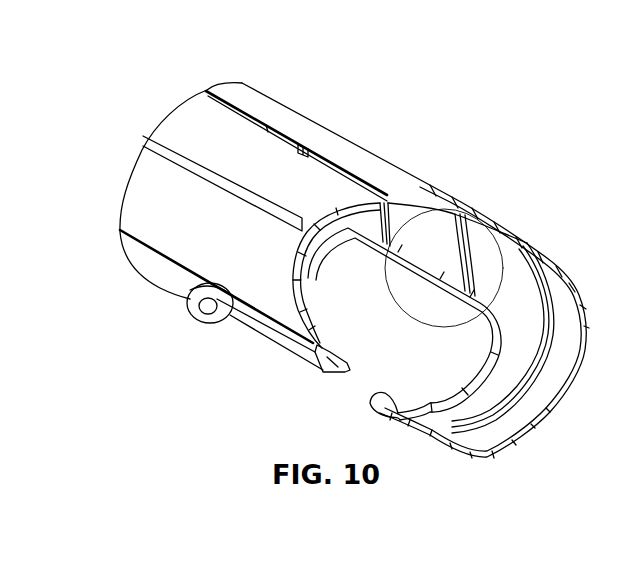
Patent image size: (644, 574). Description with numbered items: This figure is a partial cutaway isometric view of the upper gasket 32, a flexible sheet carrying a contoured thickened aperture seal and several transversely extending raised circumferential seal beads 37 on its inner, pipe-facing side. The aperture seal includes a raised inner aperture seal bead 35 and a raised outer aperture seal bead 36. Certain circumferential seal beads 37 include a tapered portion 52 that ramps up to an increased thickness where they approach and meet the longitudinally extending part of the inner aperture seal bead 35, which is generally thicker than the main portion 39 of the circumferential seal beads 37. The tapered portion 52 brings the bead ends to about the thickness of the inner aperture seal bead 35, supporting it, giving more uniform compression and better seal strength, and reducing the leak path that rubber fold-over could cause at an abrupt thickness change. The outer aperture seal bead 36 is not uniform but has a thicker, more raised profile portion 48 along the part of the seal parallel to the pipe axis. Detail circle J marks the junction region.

The upper gasket 32 is at (160, 92).
The inner aperture seal bead 35 is at (413, 285).
The outer aperture seal bead 36 is at (218, 310).
The circumferential seal beads 37 is at (393, 197).
The main portion of circumferential seal beads 39 is at (527, 385).
The raised profile portion 48 is at (295, 348).
The tapered portion 52 is at (393, 223).
The detail circle J is at (492, 228).